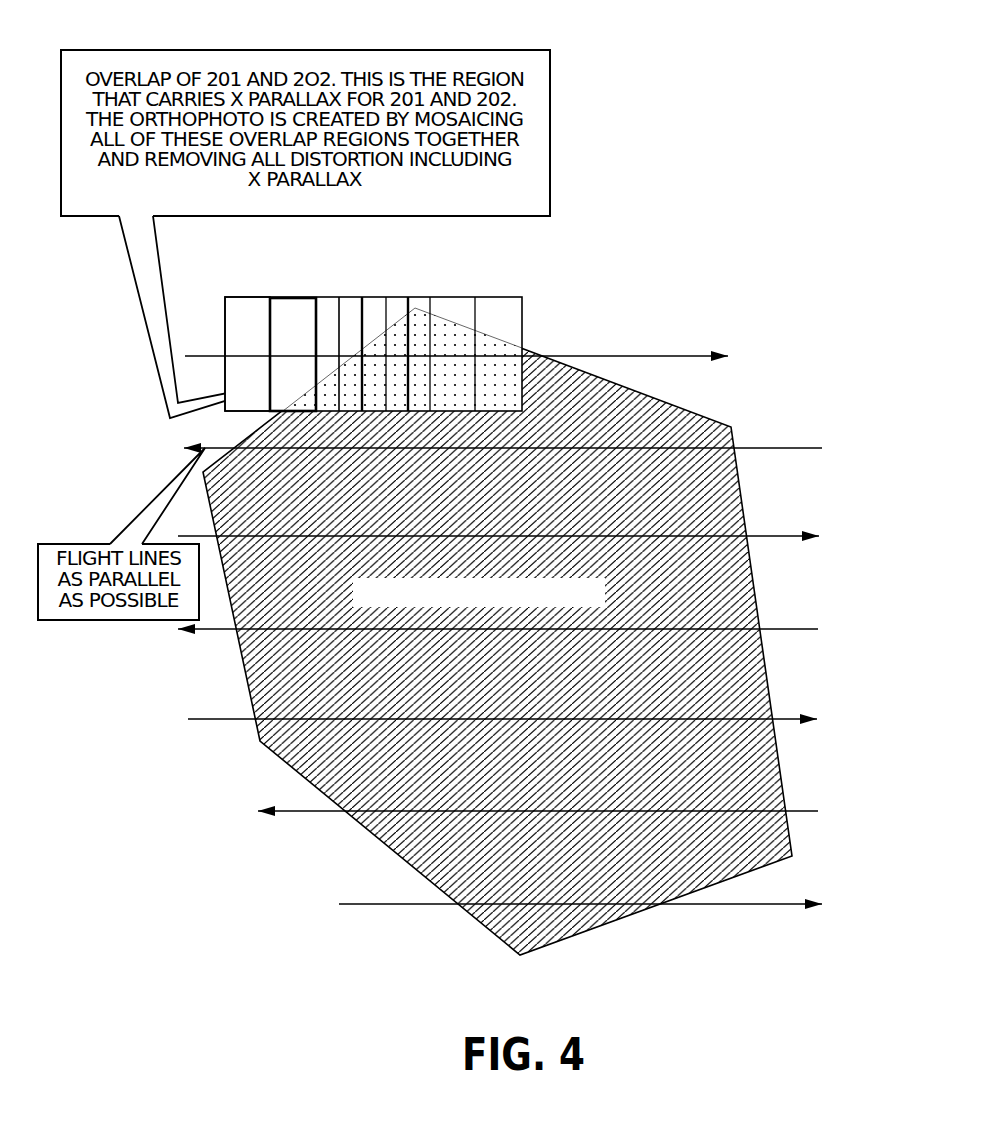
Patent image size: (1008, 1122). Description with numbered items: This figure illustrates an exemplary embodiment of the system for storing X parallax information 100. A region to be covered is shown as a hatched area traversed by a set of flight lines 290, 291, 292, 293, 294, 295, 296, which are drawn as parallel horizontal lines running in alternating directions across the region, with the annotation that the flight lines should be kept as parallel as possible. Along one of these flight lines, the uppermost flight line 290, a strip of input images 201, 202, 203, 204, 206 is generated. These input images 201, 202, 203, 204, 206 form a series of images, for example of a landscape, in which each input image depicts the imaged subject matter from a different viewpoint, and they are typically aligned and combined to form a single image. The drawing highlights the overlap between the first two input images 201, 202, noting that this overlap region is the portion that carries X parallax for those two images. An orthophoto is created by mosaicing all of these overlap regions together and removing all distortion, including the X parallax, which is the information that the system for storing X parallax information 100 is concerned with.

The system for storing X parallax information 100 is at (679, 280).
The input image 201 is at (247, 354).
The input image 202 is at (293, 354).
The input image 203 is at (341, 354).
The input image 204 is at (387, 354).
The input image 206 is at (447, 354).
The flight line 290 is at (481, 358).
The flight line 291 is at (528, 448).
The flight line 292 is at (525, 539).
The flight line 293 is at (525, 631).
The flight line 294 is at (530, 721).
The flight line 295 is at (565, 812).
The flight line 296 is at (606, 905).